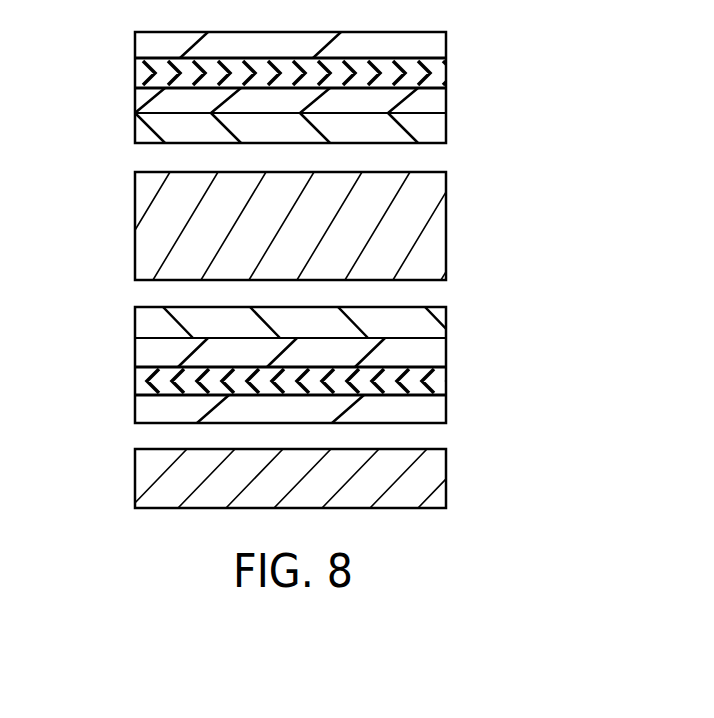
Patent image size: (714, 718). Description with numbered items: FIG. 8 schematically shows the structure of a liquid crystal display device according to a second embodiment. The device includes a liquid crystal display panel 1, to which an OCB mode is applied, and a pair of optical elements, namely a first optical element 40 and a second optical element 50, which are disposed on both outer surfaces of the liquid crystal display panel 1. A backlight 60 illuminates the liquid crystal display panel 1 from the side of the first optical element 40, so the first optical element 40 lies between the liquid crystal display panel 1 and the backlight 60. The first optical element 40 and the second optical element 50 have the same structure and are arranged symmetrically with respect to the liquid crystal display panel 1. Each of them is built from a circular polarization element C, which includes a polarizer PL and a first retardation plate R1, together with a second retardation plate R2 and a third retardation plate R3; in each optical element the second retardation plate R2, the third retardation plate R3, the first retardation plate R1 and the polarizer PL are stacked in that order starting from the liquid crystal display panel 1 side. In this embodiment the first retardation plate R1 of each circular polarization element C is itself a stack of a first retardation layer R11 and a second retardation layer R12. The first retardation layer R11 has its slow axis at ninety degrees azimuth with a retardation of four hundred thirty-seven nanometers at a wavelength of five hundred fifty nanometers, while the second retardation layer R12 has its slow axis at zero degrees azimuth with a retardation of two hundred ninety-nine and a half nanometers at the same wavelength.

The liquid crystal display panel 1 is at (433, 221).
The first optical element 40 is at (457, 423).
The second optical element 50 is at (457, 32).
The backlight 60 is at (433, 472).
The circular polarization element C is at (65, 33).
The polarizer PL is at (148, 45).
The first retardation plate R1 is at (147, 77).
The first retardation layer R11 is at (448, 75).
The second retardation layer R12 is at (448, 62).
The second retardation plate R2 is at (147, 133).
The third retardation plate R3 is at (140, 102).